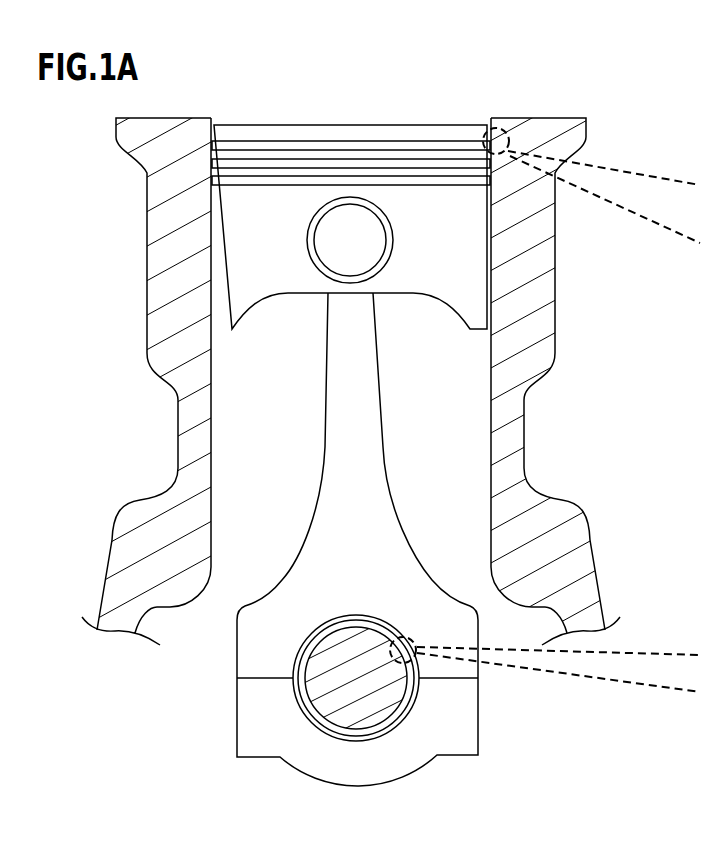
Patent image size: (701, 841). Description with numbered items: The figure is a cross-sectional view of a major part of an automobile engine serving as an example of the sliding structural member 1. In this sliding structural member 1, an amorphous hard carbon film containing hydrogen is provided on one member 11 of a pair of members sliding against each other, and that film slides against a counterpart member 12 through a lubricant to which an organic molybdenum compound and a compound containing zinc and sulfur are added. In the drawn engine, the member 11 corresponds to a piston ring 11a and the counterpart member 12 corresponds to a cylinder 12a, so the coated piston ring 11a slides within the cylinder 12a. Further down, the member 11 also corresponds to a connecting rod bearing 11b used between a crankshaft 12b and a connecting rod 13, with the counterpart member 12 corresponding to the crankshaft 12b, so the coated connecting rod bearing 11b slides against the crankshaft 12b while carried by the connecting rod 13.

The sliding structural member 1 is at (291, 116).
The member 11 is at (456, 413).
The piston ring 11a is at (421, 147).
The connecting rod bearing 11b is at (410, 688).
The counterpart member 12 is at (350, 420).
The cylinder 12a is at (545, 295).
The crankshaft 12b is at (368, 697).
The connecting rod 13 is at (358, 384).